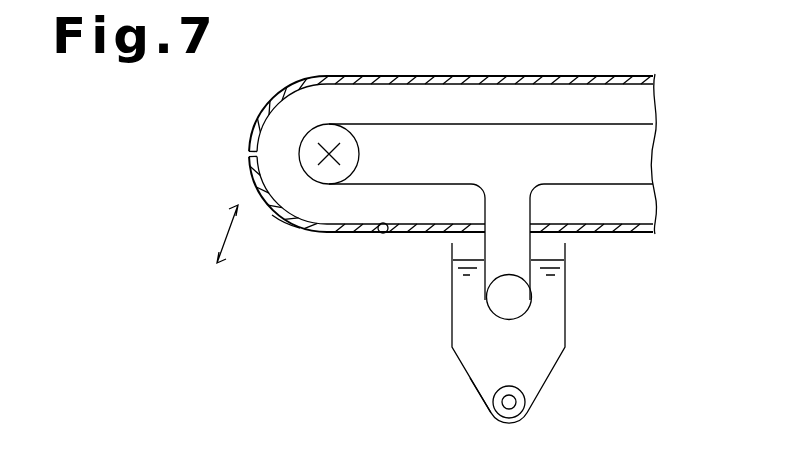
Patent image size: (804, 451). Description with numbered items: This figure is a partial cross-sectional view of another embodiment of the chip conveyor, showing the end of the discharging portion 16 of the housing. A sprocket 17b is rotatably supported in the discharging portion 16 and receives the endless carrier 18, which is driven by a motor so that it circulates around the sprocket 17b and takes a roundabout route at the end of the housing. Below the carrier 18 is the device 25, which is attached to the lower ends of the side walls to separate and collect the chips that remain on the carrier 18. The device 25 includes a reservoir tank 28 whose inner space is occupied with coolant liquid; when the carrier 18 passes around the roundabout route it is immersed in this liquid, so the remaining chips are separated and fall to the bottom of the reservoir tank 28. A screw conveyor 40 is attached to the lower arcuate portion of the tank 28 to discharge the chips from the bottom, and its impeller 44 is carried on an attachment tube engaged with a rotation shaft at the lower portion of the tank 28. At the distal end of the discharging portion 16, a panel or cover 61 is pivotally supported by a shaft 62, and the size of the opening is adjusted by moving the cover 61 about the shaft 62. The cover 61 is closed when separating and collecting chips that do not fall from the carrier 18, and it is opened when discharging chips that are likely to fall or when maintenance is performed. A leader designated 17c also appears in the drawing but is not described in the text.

The discharging portion 16 is at (600, 76).
The endless carrier 18 is at (480, 123).
The sprocket 17b is at (343, 128).
The pipe outlet 17c is at (505, 275).
The device 25 is at (528, 333).
The reservoir tank 28 is at (566, 318).
The screw conveyor 40 is at (470, 398).
The impeller 44 is at (526, 400).
The cover 61 is at (283, 215).
The shaft 62 is at (383, 233).